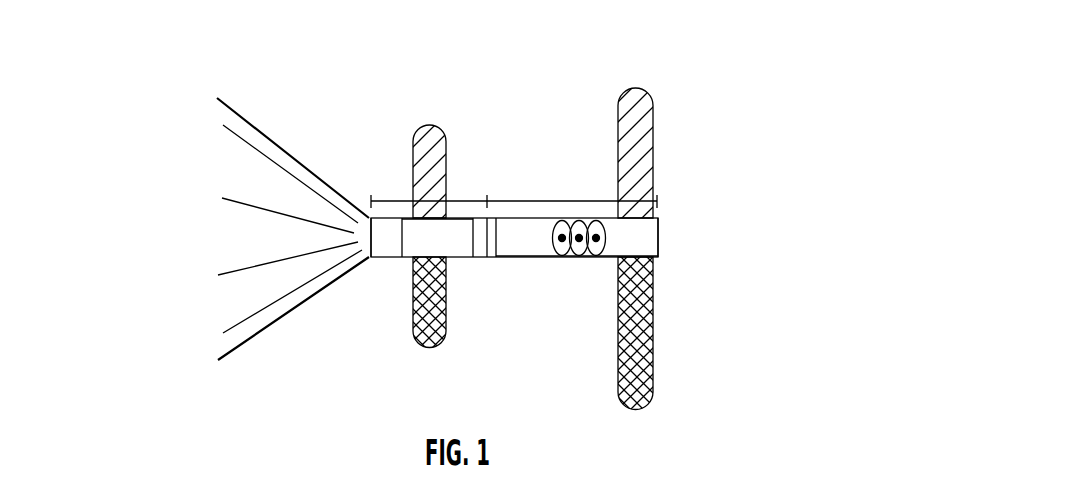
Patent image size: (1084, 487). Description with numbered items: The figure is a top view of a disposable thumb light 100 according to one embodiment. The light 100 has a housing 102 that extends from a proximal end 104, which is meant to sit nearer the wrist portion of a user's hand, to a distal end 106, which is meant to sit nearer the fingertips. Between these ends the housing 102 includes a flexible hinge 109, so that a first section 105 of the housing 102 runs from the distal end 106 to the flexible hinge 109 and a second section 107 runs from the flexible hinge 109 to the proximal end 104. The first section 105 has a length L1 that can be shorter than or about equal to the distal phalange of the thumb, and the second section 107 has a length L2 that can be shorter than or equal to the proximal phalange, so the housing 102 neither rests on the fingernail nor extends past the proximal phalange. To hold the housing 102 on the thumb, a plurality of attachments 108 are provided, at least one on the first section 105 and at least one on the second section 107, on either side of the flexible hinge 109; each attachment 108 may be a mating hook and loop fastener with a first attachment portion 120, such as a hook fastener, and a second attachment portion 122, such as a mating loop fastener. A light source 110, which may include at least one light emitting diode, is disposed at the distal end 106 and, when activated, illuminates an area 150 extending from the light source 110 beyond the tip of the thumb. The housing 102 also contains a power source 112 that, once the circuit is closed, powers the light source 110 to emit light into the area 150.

The light 100 is at (316, 34).
The housing 102 is at (542, 222).
The proximal end 104 is at (660, 240).
The first section 105 is at (458, 232).
The distal end 106 is at (370, 268).
The second section 107 is at (525, 247).
The attachment 108 is at (416, 114).
The flexible hinge 109 is at (482, 270).
The light source 110 is at (392, 243).
The power source 112 is at (596, 256).
The first attachment portion 120 is at (412, 153).
The second attachment portion 122 is at (423, 325).
The area 150 is at (252, 318).
The length of the first section L1 is at (380, 188).
The length of the second section L2 is at (584, 188).